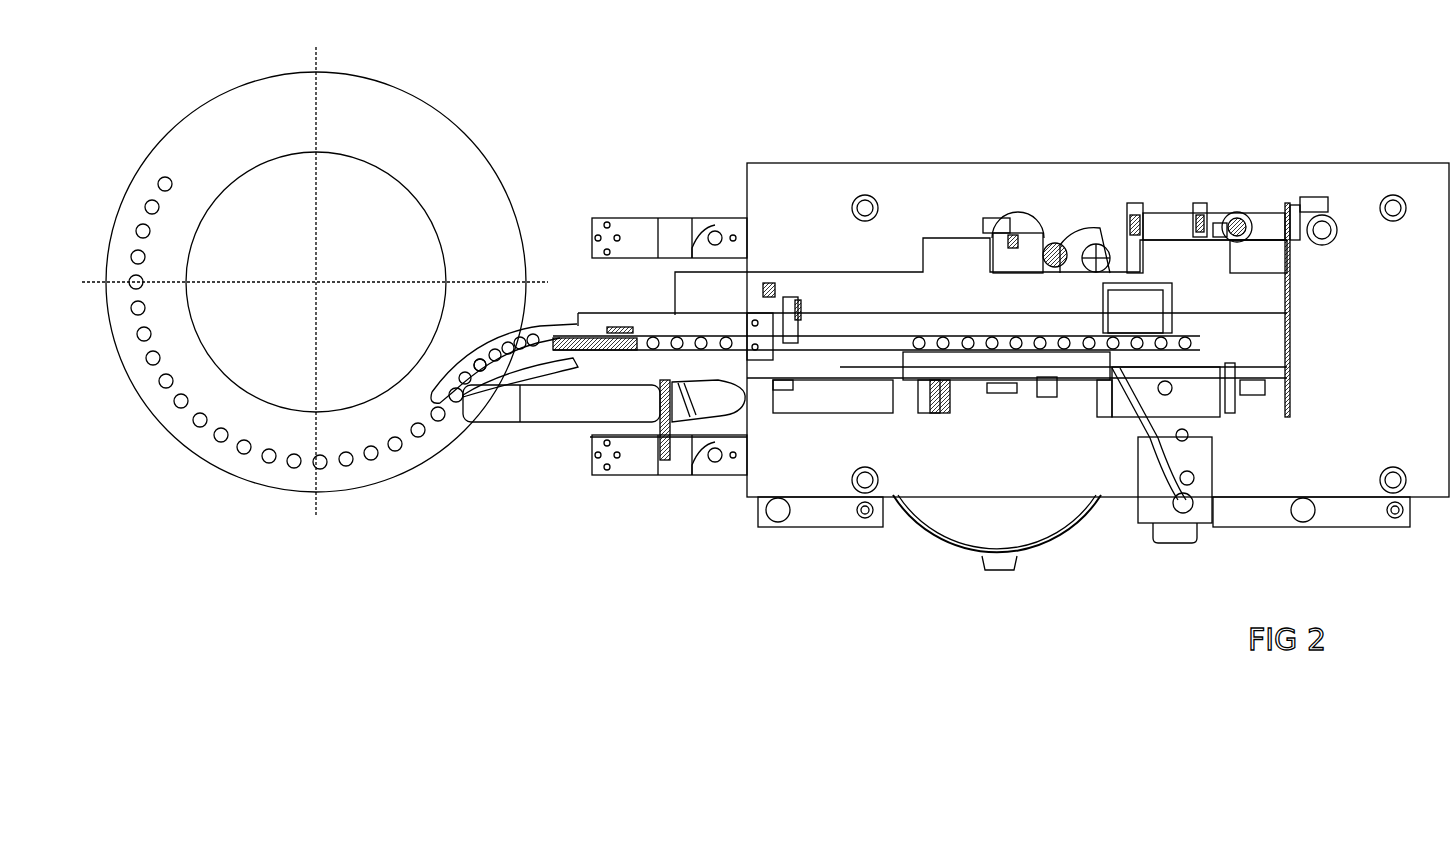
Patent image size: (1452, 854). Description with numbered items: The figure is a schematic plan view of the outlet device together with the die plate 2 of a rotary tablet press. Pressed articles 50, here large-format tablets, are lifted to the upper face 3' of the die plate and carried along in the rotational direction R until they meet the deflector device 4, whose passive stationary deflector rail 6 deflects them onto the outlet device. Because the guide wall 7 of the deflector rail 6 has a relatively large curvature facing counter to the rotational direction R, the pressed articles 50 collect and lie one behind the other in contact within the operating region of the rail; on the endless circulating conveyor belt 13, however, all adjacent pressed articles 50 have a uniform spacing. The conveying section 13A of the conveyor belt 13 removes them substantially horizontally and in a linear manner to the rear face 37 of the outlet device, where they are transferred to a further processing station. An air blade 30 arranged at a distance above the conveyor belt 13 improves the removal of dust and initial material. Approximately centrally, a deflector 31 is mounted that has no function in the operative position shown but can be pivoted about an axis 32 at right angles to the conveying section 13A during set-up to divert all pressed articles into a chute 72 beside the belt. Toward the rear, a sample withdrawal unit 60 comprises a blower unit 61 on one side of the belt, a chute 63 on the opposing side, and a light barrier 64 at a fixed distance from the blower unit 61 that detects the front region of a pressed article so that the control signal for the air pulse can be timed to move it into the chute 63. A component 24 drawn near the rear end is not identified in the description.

The die plate 2 is at (542, 163).
The upper face of the die plate 3' is at (331, 281).
The deflector device 4 is at (485, 325).
The deflector rail 6 is at (451, 372).
The guide wall 7 is at (477, 372).
The conveyor belt 13 is at (1075, 368).
The conveying section 13A is at (998, 343).
The clamp ring 24 is at (1322, 232).
The air blade 30 is at (783, 253).
The deflector 31 is at (855, 345).
The axis 32 is at (790, 305).
The rear face 37 is at (1293, 297).
The pressed articles 50 is at (477, 370).
The sample withdrawal unit 60 is at (1113, 473).
The blower unit 61 is at (1130, 305).
The chute 63 is at (1192, 400).
The light barrier 64 is at (1008, 278).
The chute 72 is at (840, 403).
The rotational direction R is at (116, 379).